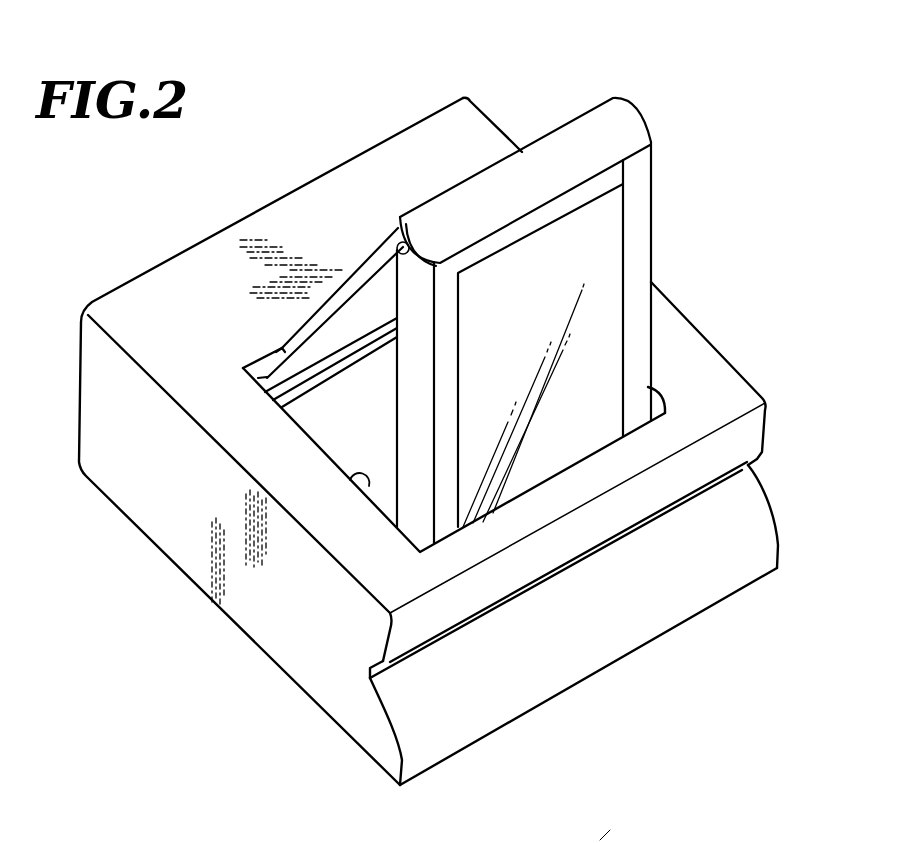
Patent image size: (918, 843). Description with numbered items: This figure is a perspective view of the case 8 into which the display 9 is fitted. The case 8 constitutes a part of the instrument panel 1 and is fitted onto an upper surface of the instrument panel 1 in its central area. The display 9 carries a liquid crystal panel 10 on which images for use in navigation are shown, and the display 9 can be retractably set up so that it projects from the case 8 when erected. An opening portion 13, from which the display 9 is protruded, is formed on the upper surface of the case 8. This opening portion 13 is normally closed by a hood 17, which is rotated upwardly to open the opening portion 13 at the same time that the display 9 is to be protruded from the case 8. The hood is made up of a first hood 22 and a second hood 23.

The instrument panel 1 is at (612, 833).
The case 8 is at (711, 325).
The display 9 is at (650, 238).
The liquid crystal panel 10 is at (600, 277).
The opening portion 13 is at (369, 486).
The hood 17 is at (573, 271).
The first hood 22 is at (352, 313).
The second hood 23 is at (618, 128).